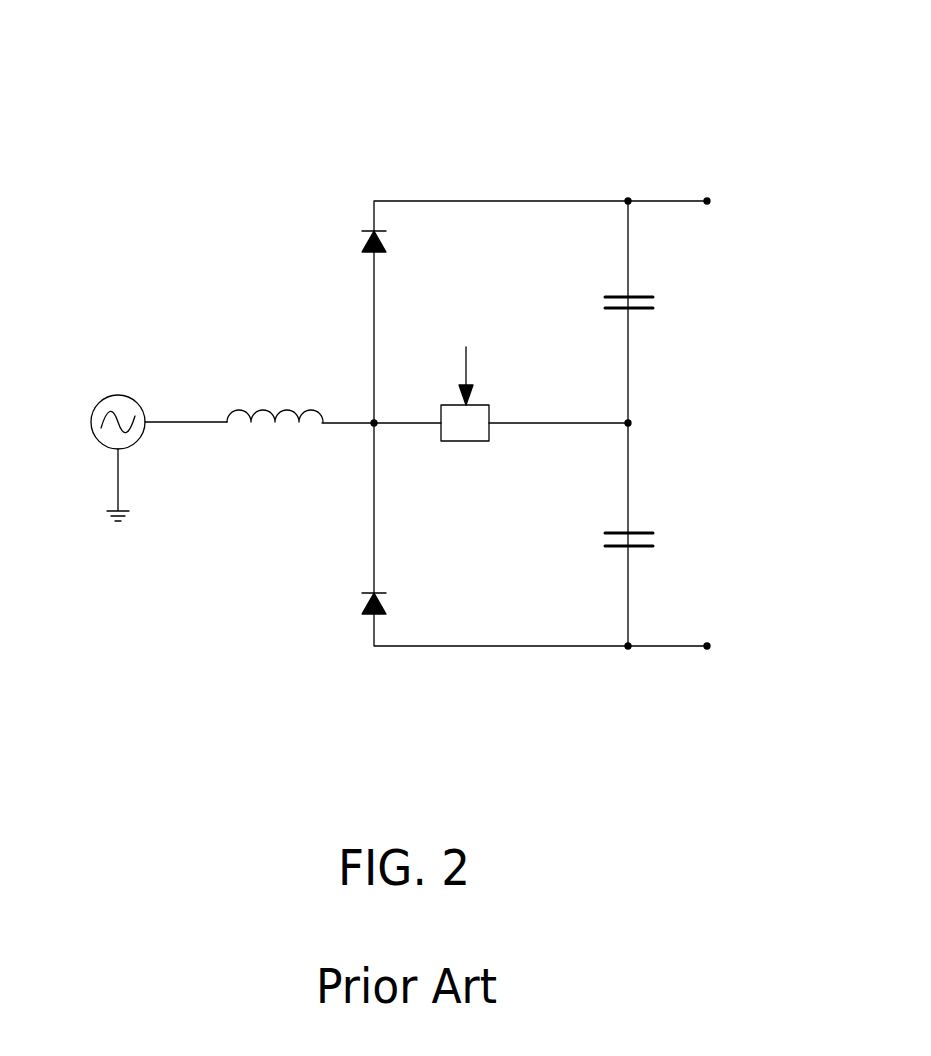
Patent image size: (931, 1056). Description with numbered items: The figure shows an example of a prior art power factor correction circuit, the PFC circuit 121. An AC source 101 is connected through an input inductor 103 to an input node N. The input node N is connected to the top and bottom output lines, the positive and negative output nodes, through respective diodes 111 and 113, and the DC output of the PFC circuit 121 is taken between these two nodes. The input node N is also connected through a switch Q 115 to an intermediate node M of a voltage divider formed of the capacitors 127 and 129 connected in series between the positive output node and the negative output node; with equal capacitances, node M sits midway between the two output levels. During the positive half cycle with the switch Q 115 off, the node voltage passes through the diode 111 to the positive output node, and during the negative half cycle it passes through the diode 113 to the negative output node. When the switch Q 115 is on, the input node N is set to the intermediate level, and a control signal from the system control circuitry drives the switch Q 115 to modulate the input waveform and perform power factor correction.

The AC source 101 is at (120, 397).
The input inductor 103 is at (252, 427).
The diode 111 is at (365, 255).
The diode 113 is at (383, 601).
The switch Q 115 is at (468, 442).
The PFC circuit 121 is at (466, 133).
The capacitor 127 is at (645, 295).
The capacitor 129 is at (645, 533).